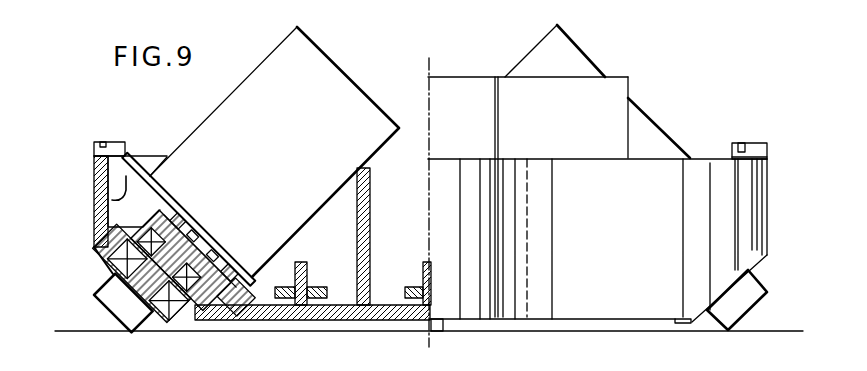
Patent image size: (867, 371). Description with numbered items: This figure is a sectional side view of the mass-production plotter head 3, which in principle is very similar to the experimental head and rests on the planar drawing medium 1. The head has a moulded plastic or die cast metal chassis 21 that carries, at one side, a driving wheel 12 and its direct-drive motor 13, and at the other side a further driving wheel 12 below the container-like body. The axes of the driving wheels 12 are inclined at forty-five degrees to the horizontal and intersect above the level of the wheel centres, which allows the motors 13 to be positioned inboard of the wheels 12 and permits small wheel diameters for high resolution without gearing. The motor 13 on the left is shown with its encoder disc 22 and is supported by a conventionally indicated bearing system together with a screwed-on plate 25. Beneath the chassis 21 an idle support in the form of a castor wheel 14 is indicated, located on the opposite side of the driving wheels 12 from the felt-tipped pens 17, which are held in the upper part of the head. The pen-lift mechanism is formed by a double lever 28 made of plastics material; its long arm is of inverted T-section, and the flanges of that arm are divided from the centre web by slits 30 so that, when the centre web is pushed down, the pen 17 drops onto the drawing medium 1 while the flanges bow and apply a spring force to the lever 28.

The drawing medium 1 is at (777, 331).
The plotter head 3 is at (88, 231).
The driving wheels 12 is at (113, 292).
The motors 13 is at (223, 121).
The castor wheel 14 is at (444, 330).
The pens 17 is at (527, 88).
The chassis 21 is at (340, 313).
The encoder discs 22 is at (116, 200).
The screwed-on plate 25 is at (183, 202).
The double lever 28 is at (298, 262).
The slits 30 is at (292, 298).